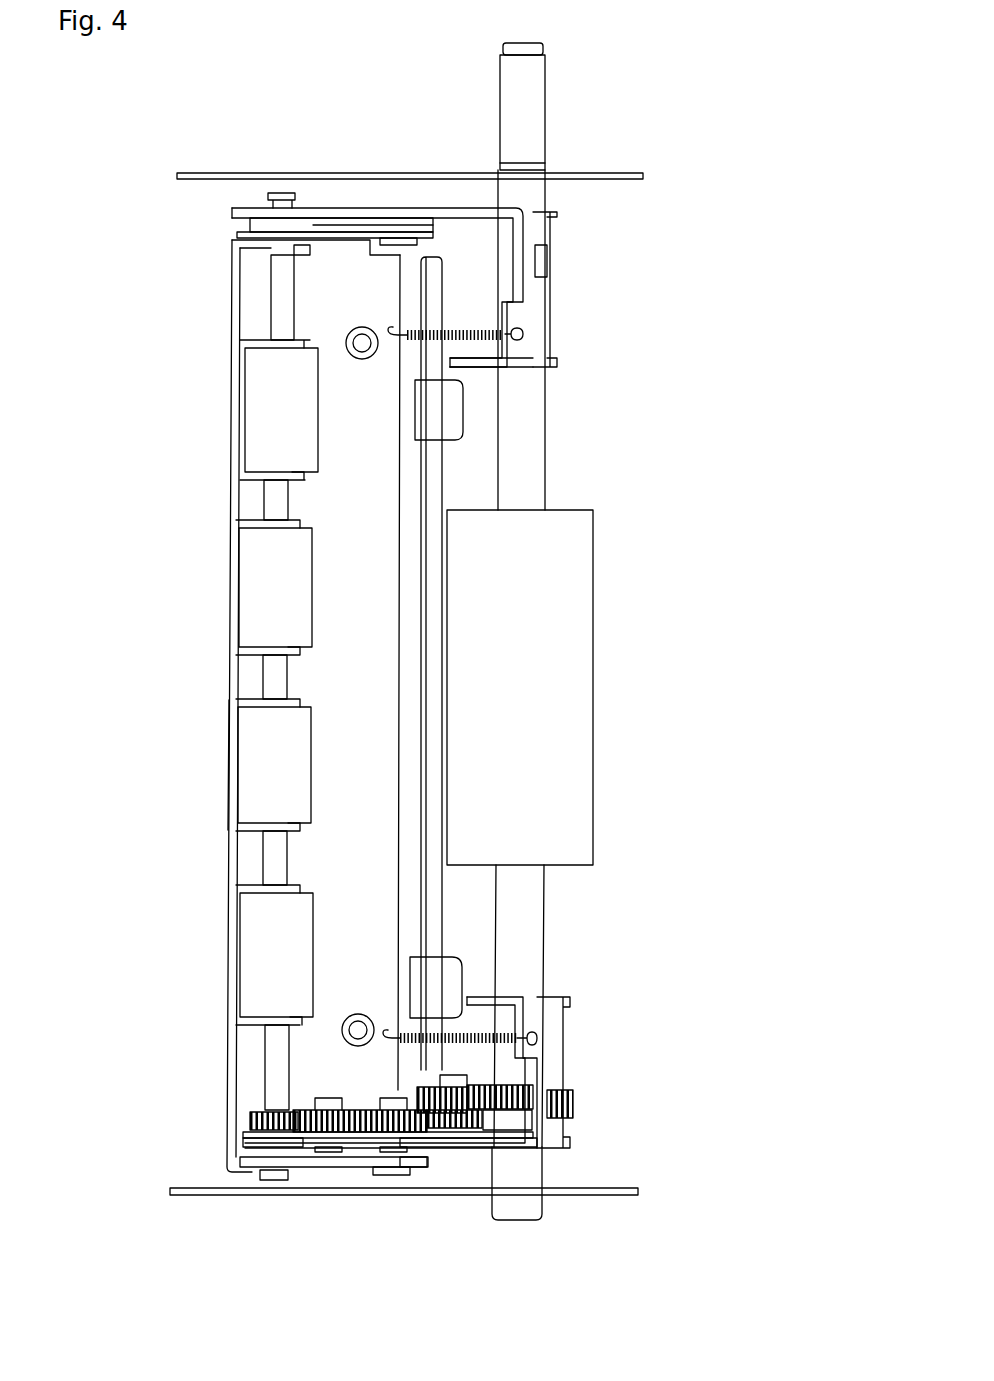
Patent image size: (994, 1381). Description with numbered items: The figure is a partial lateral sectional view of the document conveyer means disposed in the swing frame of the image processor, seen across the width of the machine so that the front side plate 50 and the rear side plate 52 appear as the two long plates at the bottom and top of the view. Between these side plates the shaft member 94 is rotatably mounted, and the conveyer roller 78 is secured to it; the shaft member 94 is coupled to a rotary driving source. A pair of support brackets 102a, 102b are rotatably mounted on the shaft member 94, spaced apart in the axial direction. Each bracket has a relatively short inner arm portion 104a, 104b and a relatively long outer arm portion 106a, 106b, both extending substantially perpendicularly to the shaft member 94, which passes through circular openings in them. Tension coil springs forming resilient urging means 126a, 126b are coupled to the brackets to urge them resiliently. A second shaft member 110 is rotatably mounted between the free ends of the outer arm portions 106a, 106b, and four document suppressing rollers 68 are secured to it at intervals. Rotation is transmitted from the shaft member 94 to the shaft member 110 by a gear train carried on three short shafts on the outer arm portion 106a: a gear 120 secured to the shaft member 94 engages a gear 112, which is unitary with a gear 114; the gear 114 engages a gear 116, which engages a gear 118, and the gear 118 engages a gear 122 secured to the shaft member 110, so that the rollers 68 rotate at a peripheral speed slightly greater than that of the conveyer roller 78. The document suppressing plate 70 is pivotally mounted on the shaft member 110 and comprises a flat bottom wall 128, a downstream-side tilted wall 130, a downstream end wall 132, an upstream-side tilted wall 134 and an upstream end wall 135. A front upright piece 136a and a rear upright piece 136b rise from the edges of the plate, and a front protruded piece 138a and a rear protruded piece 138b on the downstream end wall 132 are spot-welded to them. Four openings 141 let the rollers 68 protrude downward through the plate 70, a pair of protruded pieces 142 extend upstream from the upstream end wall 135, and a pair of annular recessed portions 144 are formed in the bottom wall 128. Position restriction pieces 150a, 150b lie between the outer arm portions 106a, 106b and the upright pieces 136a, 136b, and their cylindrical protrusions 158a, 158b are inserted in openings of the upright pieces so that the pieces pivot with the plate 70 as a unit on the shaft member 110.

The front side plate 50 is at (422, 1202).
The rear side plate 52 is at (342, 173).
The document suppressing rollers 68 is at (245, 410).
The document suppressing plate 70 is at (222, 823).
The conveyer roller 78 is at (594, 637).
The shaft member 94 is at (546, 440).
The support bracket 102a is at (567, 1035).
The support bracket 102b is at (553, 312).
The inner arm portion 104a is at (513, 995).
The inner arm portion 104b is at (480, 372).
The outer arm portion 106a is at (480, 1150).
The outer arm portion 106b is at (428, 208).
The shaft member 110 is at (264, 502).
The gear 112 is at (423, 1093).
The gear 114 is at (458, 1130).
The gear 116 is at (400, 1150).
The gear 118 is at (300, 1112).
The gear 120 is at (508, 1090).
The gear 122 is at (250, 1120).
The resilient urging means 126a is at (468, 1023).
The resilient urging means 126b is at (457, 330).
The bottom wall 128 is at (366, 690).
The downstream-side tilted wall 130 is at (247, 307).
The downstream end wall 132 is at (227, 762).
The upstream-side tilted wall 134 is at (392, 822).
The upstream end wall 135 is at (436, 478).
The front upright piece 136a is at (313, 1167).
The rear upright piece 136b is at (327, 233).
The front protruded piece 138a is at (250, 1172).
The rear protruded piece 138b is at (340, 238).
The openings 141 is at (236, 572).
The protruded pieces 142 is at (466, 413).
The annular recessed portions 144 is at (362, 360).
The position restriction piece 150a is at (243, 1157).
The position restriction piece 150b is at (247, 222).
The cylindrical protrusion 158a is at (400, 1177).
The cylindrical protrusion 158b is at (405, 250).